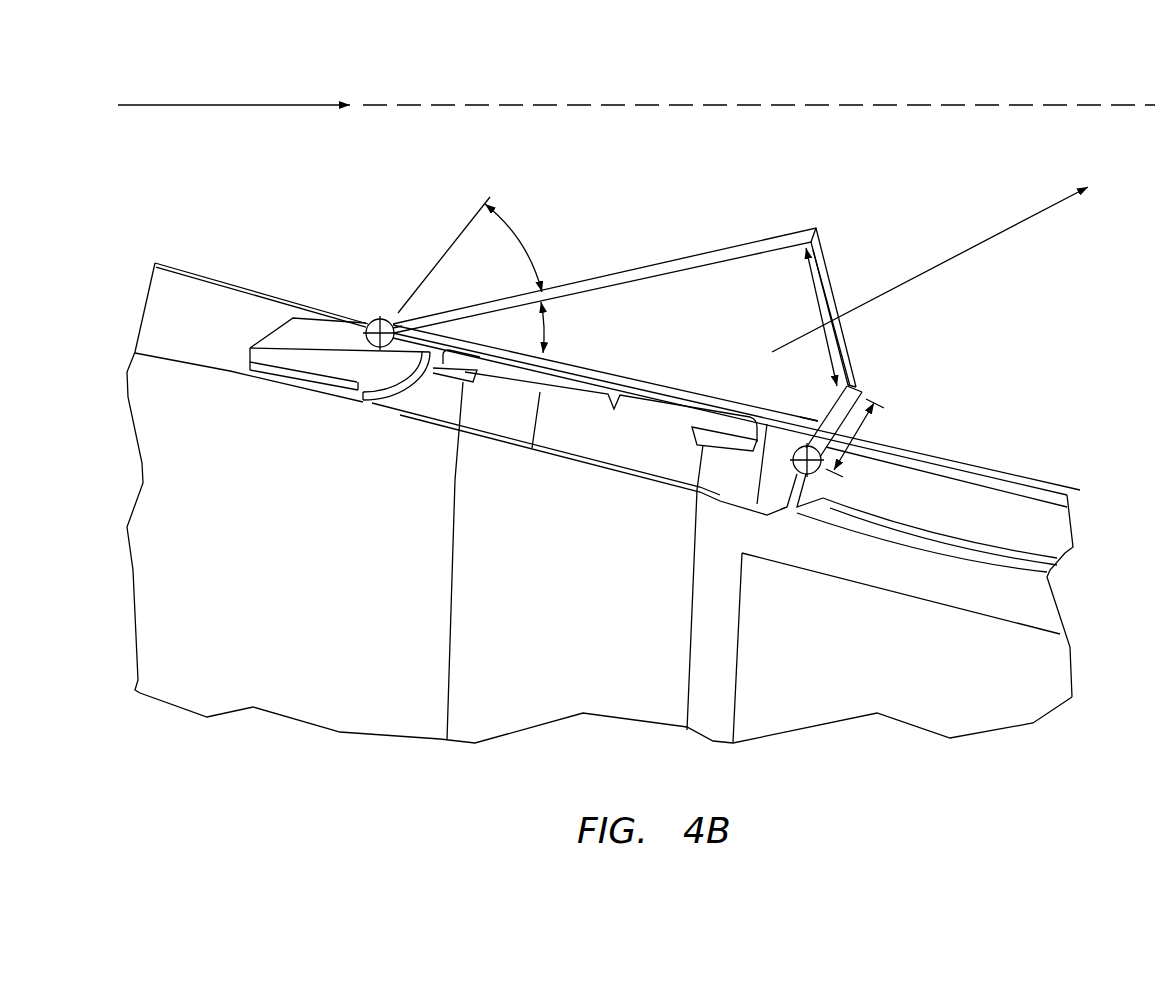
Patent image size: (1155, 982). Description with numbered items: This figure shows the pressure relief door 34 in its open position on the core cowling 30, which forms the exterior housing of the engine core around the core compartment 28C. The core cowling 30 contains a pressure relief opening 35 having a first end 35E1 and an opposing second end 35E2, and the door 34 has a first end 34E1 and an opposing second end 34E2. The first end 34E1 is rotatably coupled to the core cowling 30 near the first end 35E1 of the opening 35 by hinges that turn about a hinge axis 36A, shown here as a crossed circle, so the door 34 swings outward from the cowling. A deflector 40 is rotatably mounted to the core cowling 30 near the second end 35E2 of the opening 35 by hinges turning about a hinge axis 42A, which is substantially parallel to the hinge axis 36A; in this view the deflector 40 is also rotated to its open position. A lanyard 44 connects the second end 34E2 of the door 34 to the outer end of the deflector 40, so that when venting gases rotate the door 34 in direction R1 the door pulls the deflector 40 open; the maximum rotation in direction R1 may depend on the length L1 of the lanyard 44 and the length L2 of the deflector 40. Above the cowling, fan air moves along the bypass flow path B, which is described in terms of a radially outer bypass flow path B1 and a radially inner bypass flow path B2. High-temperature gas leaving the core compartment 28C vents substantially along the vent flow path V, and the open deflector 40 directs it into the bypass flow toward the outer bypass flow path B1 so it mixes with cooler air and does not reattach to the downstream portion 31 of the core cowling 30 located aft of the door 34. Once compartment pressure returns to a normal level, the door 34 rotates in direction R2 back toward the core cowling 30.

The core compartment 28C is at (550, 632).
The core cowling 30 is at (222, 268).
The downstream portion 31 is at (1018, 466).
The pressure relief door 34 is at (697, 250).
The first end 34E1 is at (383, 306).
The second end 34E2 is at (797, 222).
The pressure relief opening 35 is at (620, 362).
The first end 35E1 is at (358, 304).
The second end 35E2 is at (810, 416).
The hinge axis 36A is at (372, 346).
The deflector 40 is at (862, 383).
The hinge axis 42A is at (796, 474).
The lanyard 44 is at (850, 337).
The bypass flow path B is at (222, 104).
The radially outer bypass flow path B1 is at (615, 69).
The radially inner bypass flow path B2 is at (615, 172).
The vent flow path V is at (985, 242).
The direction R1 is at (522, 238).
The direction R2 is at (574, 327).
The length of the lanyard L1 is at (815, 301).
The length of the deflector L2 is at (868, 427).